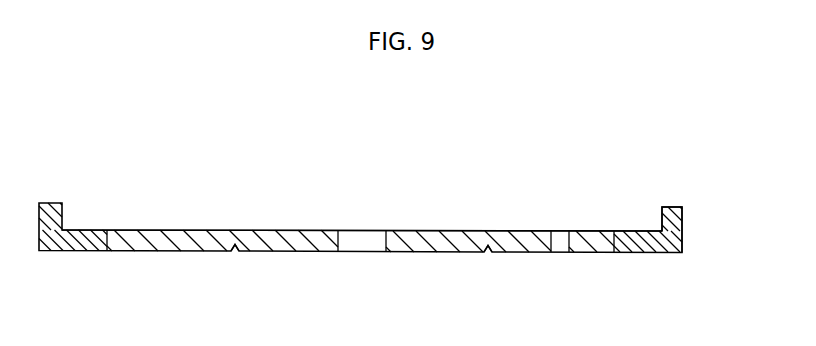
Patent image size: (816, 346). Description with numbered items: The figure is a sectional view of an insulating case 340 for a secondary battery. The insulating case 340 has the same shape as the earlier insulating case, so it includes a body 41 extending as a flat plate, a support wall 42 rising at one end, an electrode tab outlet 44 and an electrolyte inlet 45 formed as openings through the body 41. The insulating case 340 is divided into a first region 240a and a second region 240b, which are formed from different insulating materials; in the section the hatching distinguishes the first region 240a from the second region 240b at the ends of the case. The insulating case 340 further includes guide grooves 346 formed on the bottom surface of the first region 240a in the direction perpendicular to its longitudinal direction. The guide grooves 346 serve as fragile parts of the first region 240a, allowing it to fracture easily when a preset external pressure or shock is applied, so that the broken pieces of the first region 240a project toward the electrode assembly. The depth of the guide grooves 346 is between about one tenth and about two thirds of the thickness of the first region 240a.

The insulating case 340 is at (699, 184).
The body 41 is at (132, 229).
The support wall 42 is at (683, 210).
The electrode tab outlet 44 is at (359, 240).
The electrolyte inlet 45 is at (561, 240).
The guide grooves 346 is at (235, 251).
The first region 240a is at (148, 251).
The second region 240b is at (60, 250).